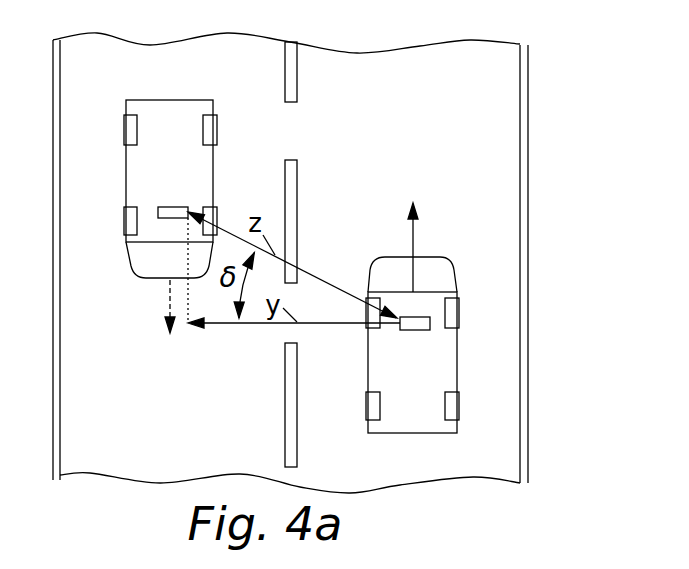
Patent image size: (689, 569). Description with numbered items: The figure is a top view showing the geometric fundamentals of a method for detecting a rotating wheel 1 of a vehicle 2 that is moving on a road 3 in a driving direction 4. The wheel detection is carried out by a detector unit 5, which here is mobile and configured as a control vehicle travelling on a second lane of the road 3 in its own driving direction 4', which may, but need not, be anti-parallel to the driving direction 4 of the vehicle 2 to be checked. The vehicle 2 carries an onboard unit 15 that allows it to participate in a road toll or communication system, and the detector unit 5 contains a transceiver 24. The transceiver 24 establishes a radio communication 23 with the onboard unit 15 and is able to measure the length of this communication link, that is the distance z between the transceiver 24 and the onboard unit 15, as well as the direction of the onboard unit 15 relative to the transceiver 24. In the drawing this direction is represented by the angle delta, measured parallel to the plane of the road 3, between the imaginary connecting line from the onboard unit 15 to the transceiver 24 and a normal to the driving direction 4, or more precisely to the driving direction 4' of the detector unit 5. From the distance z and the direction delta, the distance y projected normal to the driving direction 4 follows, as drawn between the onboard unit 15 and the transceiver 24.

The wheel 1 is at (215, 130).
The vehicle 2 is at (127, 163).
The road 3 is at (530, 92).
The driving direction 4 is at (142, 306).
The driving direction of detector unit 4' is at (446, 234).
The detector unit 5 is at (457, 343).
The onboard unit 15 is at (174, 207).
The radio communication 23 is at (315, 277).
The transceiver 24 is at (414, 330).